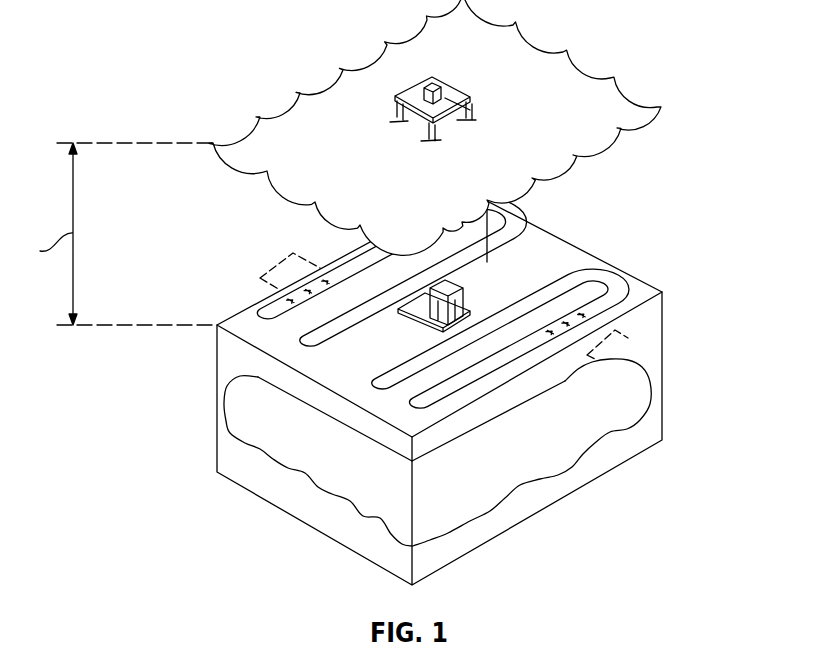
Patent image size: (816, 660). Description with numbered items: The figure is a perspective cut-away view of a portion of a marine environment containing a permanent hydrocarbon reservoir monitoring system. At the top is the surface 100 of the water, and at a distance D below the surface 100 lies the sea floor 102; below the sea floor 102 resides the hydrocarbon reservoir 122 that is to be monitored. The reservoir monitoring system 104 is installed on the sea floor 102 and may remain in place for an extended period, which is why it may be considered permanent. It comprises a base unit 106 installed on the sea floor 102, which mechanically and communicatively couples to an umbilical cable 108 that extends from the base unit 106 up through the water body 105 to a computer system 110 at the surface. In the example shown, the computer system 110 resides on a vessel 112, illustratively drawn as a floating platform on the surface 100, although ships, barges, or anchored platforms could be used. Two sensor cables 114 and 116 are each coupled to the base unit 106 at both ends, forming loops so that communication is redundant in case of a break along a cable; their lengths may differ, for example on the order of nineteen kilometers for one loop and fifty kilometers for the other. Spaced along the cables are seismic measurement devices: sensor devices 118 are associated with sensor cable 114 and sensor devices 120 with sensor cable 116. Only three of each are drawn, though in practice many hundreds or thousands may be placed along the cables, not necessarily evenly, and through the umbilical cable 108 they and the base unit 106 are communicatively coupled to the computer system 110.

The surface of the water 100 is at (368, 182).
The sea floor 102 is at (224, 336).
The reservoir monitoring system 104 is at (233, 279).
The water body 105 is at (405, 309).
The base unit 106 is at (463, 282).
The umbilical cable 108 is at (510, 222).
The computer system 110 is at (422, 72).
The vessel 112 is at (420, 84).
The sensor cable 114 is at (397, 268).
The sensor cable 116 is at (505, 336).
The sensor devices 118 is at (272, 266).
The sensor devices 120 is at (652, 373).
The hydrocarbon reservoir 122 is at (490, 486).
The distance D is at (116, 234).